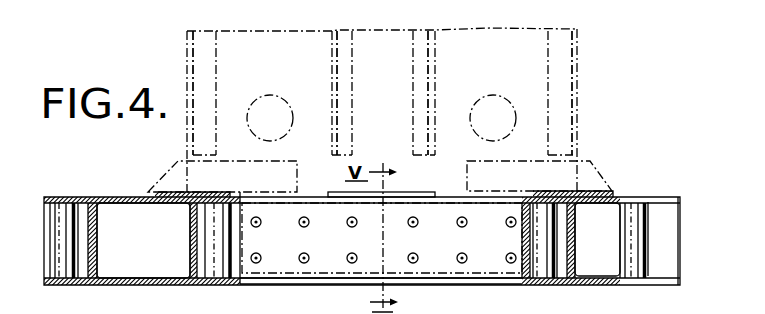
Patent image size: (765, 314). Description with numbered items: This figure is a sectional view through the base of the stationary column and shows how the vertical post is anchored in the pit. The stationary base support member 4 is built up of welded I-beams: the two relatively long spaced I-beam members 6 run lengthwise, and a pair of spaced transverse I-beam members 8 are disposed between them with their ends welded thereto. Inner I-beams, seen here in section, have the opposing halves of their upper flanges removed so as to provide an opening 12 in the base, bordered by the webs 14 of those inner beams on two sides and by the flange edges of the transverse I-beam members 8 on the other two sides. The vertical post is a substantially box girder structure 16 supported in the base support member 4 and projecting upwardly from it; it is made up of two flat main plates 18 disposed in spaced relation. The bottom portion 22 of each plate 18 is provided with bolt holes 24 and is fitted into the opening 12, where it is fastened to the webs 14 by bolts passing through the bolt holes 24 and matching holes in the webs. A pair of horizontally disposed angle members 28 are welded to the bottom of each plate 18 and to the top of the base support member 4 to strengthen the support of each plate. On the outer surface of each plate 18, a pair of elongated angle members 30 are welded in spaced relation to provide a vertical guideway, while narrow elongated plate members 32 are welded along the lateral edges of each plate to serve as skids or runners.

The stationary base support member 4 is at (657, 192).
The long spaced I-beam members 6 is at (668, 224).
The spaced transverse I-beam members 8 is at (190, 252).
The opening 12 is at (447, 205).
The webs 14 is at (303, 197).
The box girder structure 16 is at (578, 69).
The flat main plates 18 is at (282, 39).
The bottom portion 22 is at (475, 266).
The bolt holes 24 is at (460, 254).
The horizontally disposed angle members 28 is at (178, 161).
The elongated angle members 30 is at (413, 53).
The narrow elongated plate members 32 is at (216, 53).